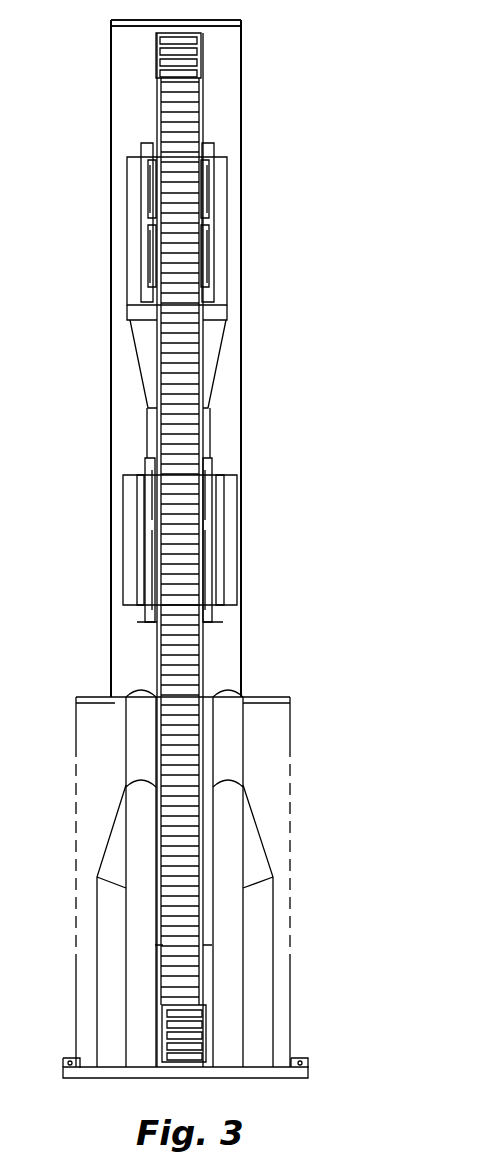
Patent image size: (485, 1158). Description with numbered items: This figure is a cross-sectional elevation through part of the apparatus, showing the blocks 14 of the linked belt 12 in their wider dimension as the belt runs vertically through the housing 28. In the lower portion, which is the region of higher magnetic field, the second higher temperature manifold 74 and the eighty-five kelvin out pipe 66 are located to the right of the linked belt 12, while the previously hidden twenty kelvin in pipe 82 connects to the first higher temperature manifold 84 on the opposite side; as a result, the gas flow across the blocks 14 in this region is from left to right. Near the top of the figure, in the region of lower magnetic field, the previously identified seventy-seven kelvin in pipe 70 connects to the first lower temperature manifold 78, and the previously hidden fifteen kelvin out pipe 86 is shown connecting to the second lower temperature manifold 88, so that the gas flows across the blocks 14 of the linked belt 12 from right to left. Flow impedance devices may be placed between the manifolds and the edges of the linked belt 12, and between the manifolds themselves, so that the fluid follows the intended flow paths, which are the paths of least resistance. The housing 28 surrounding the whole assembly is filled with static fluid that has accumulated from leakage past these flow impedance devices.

The linked belt 12 is at (200, 33).
The blocks 14 is at (199, 77).
The housing 28 is at (243, 389).
The 85K out pipe 66 is at (228, 826).
The 77K in pipe 70 is at (215, 213).
The second higher temperature manifold 74 is at (230, 533).
The first lower temperature manifold 78 is at (205, 180).
The 20K in pipe 82 is at (140, 830).
The first higher temperature manifold 84 is at (152, 507).
The 15K out pipe 86 is at (137, 250).
The second lower temperature manifold 88 is at (150, 203).